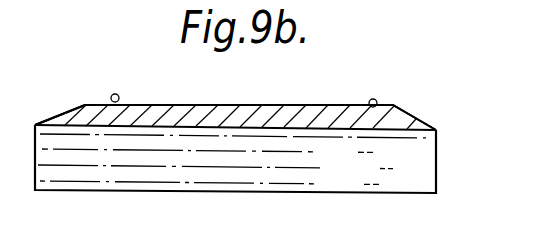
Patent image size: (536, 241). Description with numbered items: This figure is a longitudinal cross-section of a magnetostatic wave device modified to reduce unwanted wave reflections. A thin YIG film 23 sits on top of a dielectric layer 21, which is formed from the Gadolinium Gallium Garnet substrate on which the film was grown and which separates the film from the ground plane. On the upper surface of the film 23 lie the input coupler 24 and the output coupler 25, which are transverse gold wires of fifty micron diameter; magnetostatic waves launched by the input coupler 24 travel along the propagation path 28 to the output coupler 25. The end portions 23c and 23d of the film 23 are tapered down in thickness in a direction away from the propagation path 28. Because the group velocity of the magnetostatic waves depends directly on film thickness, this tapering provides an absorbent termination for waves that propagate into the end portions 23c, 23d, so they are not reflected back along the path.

The dielectric layer 21 is at (415, 176).
The YIG film 23 is at (303, 115).
The end portion of the film 23c is at (63, 110).
The end portion of the film 23d is at (421, 118).
The input coupler 24 is at (119, 95).
The output coupler 25 is at (400, 82).
The propagation path 28 is at (261, 106).